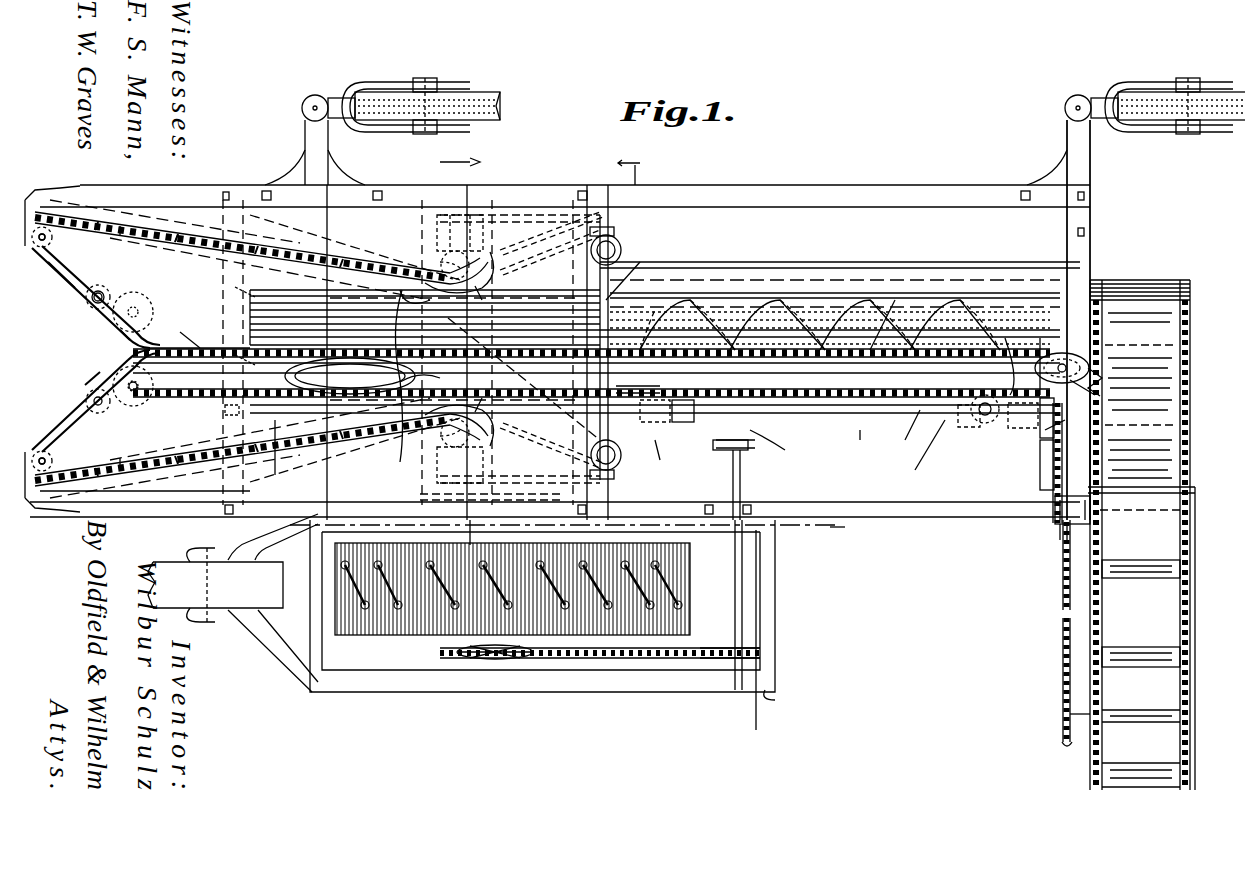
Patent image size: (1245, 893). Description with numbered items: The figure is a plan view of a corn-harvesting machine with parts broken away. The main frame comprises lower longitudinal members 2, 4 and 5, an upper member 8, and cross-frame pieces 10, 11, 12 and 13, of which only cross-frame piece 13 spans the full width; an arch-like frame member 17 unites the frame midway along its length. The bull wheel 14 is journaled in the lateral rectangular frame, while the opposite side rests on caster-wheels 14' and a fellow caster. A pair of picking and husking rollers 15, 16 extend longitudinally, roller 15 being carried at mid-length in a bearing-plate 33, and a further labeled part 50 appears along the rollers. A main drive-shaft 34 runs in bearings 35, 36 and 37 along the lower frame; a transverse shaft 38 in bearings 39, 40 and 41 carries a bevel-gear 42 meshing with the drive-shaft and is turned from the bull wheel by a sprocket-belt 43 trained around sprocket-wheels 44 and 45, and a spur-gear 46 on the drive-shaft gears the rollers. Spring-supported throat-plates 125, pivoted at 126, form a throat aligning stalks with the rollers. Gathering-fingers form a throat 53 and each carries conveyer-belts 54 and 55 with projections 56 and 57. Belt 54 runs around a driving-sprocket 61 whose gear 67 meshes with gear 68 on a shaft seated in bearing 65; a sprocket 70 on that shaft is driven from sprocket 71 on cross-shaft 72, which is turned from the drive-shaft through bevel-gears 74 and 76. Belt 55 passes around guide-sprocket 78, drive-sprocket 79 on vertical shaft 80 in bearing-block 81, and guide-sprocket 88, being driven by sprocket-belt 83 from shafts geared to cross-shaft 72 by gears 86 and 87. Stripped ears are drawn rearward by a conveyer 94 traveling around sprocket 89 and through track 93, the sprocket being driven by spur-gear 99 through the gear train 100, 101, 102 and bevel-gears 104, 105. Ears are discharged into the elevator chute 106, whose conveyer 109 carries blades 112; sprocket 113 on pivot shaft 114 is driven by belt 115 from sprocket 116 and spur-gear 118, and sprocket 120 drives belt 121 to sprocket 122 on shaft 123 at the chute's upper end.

The lower longitudinally-extending frame member 2 is at (688, 443).
The lower longitudinally-extending frame member 4 is at (568, 527).
The lower longitudinally-extending frame member 5 is at (245, 292).
The upper frame member 8 is at (245, 363).
The cross-frame piece 10 is at (232, 282).
The cross-frame piece 11 is at (355, 349).
The cross-frame piece 12 is at (780, 590).
The cross-frame piece 13 is at (1095, 272).
The main supporting or bull wheel 14 is at (512, 589).
The caster-wheel 14' is at (401, 98).
The picking and husking roller 15 is at (875, 370).
The picking and husking roller 16 is at (535, 345).
The arch-like frame member 17 is at (678, 250).
The bearing-plate 33 is at (540, 400).
The main drive-shaft 34 is at (925, 420).
The bearing 35 is at (278, 422).
The bearing 36 is at (658, 462).
The bearing 37 is at (1005, 430).
The transversely-arranged shaft 38 is at (760, 622).
The bearing 39 is at (781, 704).
The bearing 40 is at (745, 520).
The bearing 41 is at (735, 455).
The bevel-gear 42 is at (760, 440).
The sprocket-belt 43 is at (685, 430).
The sprocket-wheel 44 is at (455, 656).
The sprocket-wheel 45 is at (765, 655).
The spur-gear 46 is at (225, 410).
The auger shaft 50 is at (870, 300).
The throat 53 is at (150, 352).
The conveyer-belt 54 is at (122, 240).
The conveyer-belt 55 is at (90, 298).
The conveyer projection 56 is at (100, 232).
The conveyer projection 57 is at (85, 398).
The driving-sprocket 61 is at (475, 463).
The bearing 65 is at (484, 236).
The gear 67 is at (490, 260).
The gear 68 is at (470, 262).
The sprocket 70 is at (422, 492).
The sprocket 71 is at (612, 228).
The transversely-arranged shaft 72 is at (620, 300).
The bevel-gear 74 is at (667, 422).
The bevel-gear 76 is at (672, 392).
The guide-sprocket 78 is at (50, 252).
The drive-sprocket 79 is at (452, 292).
The vertical shaft 80 is at (428, 318).
The bearing-block 81 is at (400, 354).
The sprocket-belt 83 is at (551, 348).
The gear 86 is at (619, 343).
The gear 87 is at (618, 250).
The guide-sprocket 88 is at (133, 400).
The sprocket 89 is at (1100, 366).
The track or way 93 is at (350, 376).
The sprocket belt or conveyer 94 is at (400, 373).
The spur-gear 99 is at (1105, 398).
The gear 100 is at (1042, 338).
The gear 101 is at (1005, 338).
The gear 102 is at (921, 457).
The bevel-gear 104 is at (1040, 440).
The bevel-gear 105 is at (982, 420).
The elevator housing or chute 106 is at (1195, 572).
The conveyer 109 is at (1180, 696).
The conveyer-blade 112 is at (1135, 578).
The sprocket 113 is at (1055, 522).
The shaft 114 is at (1062, 535).
The belt 115 is at (1052, 478).
The sprocket 116 is at (1065, 405).
The spur-gear 118 is at (1045, 440).
The sprocket 120 is at (1045, 488).
The belt 121 is at (1062, 650).
The sprocket 122 is at (1062, 745).
The shaft 123 is at (1080, 725).
The throat-plate 125 is at (205, 345).
The pivot 126 is at (110, 290).